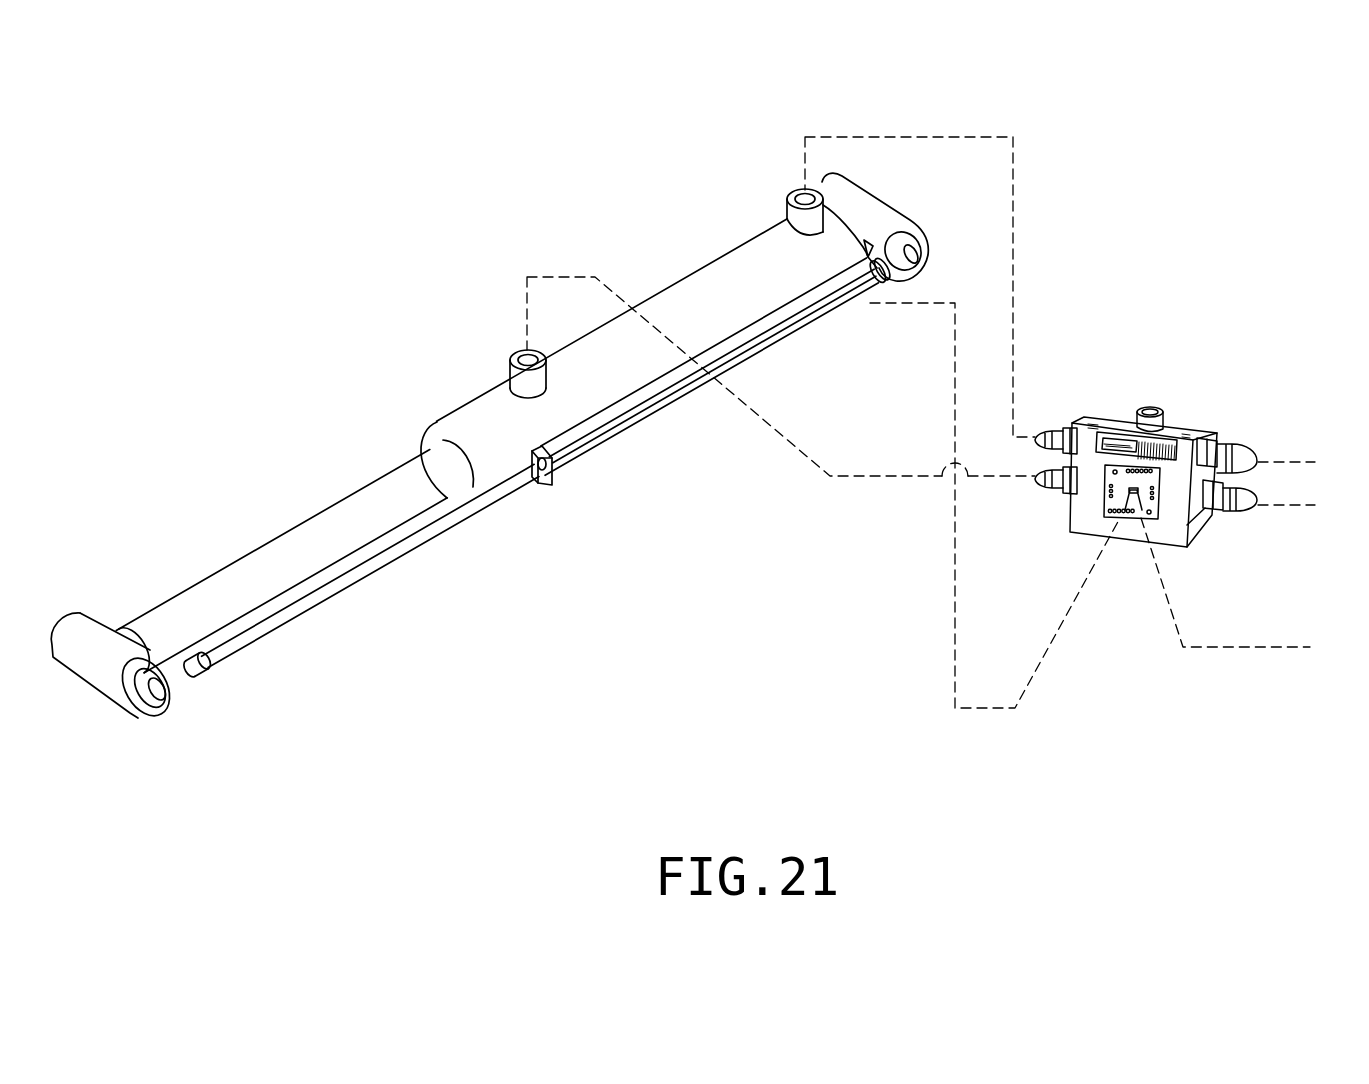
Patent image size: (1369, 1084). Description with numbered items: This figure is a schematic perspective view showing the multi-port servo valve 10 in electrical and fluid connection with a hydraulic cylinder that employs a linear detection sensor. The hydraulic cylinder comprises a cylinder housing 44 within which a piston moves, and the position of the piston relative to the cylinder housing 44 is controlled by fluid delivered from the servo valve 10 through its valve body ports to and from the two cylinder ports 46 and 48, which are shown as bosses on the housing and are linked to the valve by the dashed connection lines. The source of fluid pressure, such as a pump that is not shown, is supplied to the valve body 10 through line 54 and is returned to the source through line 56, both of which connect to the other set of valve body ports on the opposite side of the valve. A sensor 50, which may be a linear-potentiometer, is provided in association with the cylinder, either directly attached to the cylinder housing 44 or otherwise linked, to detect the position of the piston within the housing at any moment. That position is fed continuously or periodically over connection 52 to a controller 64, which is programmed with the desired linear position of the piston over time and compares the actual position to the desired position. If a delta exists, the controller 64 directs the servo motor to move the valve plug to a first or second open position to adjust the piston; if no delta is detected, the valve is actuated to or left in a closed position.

The multi-port servo valve 10 is at (1231, 432).
The cylinder housing 44 is at (698, 271).
The cylinder port 46 is at (521, 348).
The cylinder port 48 is at (792, 196).
The sensor 50 is at (590, 452).
The conduit 52 is at (980, 710).
The line 54 is at (1285, 462).
The line 56 is at (1285, 508).
The controller 64 is at (1258, 647).